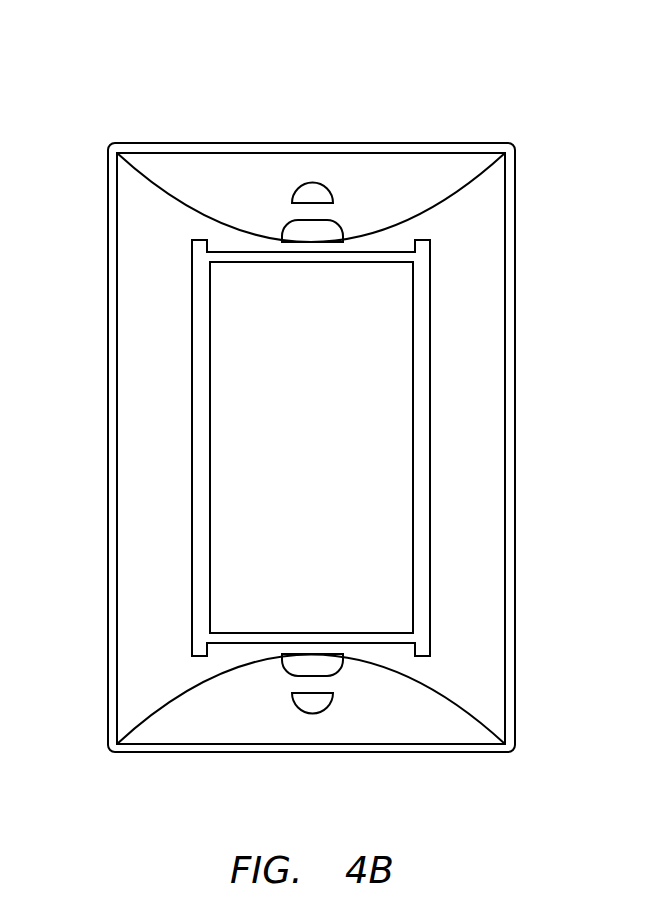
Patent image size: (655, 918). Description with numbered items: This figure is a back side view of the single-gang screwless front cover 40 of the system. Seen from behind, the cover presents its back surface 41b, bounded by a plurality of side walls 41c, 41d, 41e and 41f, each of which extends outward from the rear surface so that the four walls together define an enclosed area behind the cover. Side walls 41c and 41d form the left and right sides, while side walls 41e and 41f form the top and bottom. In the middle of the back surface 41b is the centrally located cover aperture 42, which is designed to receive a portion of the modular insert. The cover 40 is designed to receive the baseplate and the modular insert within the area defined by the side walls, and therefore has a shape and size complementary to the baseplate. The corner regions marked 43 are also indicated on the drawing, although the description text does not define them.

The single-gang screwless front cover 40 is at (82, 123).
The back surface 41b is at (395, 180).
The side wall 41c is at (108, 527).
The side wall 41d is at (515, 415).
The side wall 41e is at (213, 143).
The side wall 41f is at (318, 753).
The cover aperture 42 is at (335, 465).
The corners of cover plate 43 is at (480, 148).